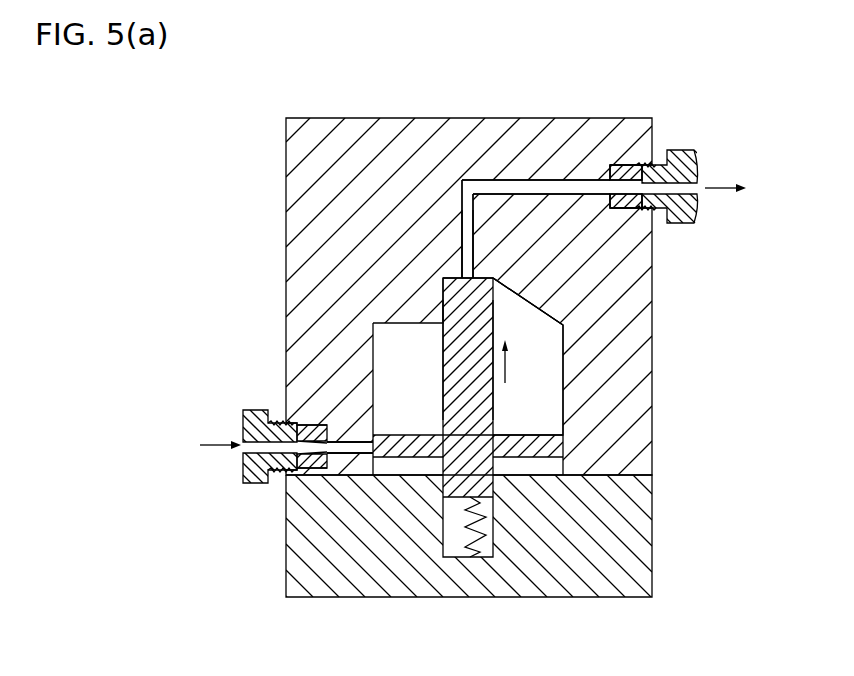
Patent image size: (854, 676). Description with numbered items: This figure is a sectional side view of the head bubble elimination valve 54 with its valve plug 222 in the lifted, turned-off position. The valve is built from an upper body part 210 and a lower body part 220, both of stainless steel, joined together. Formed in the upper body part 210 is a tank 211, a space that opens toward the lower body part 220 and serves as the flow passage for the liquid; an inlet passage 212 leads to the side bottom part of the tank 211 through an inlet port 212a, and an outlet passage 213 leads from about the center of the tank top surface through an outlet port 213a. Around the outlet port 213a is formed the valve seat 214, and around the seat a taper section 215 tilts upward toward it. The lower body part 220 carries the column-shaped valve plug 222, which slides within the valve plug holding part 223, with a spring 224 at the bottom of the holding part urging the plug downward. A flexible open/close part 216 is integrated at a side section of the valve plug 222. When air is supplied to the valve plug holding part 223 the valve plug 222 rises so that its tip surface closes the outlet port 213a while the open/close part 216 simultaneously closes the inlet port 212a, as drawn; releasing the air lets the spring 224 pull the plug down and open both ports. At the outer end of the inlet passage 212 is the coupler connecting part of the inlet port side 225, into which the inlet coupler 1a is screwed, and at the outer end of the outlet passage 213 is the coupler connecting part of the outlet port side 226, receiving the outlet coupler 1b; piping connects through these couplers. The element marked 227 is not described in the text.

The head bubble elimination valve 54 is at (222, 150).
The upper body part 210 is at (500, 135).
The lower body part 220 is at (398, 575).
The tank 211 is at (563, 362).
The inlet passage 212 is at (367, 443).
The inlet port 212a is at (352, 438).
The outlet passage 213 is at (462, 208).
The outlet port 213a is at (475, 262).
The valve seat 214 is at (444, 290).
The taper section 215 is at (533, 303).
The open/close part 216 is at (563, 448).
The valve plug 222 is at (452, 330).
The valve plug holding part 223 is at (492, 520).
The spring 224 is at (470, 546).
The coupler connecting part of the inlet port side 225 is at (302, 418).
The coupler connecting part of the outlet port side 226 is at (650, 152).
The fitting insert 227 is at (620, 165).
The inlet coupler 1a is at (253, 471).
The outlet coupler 1b is at (690, 167).